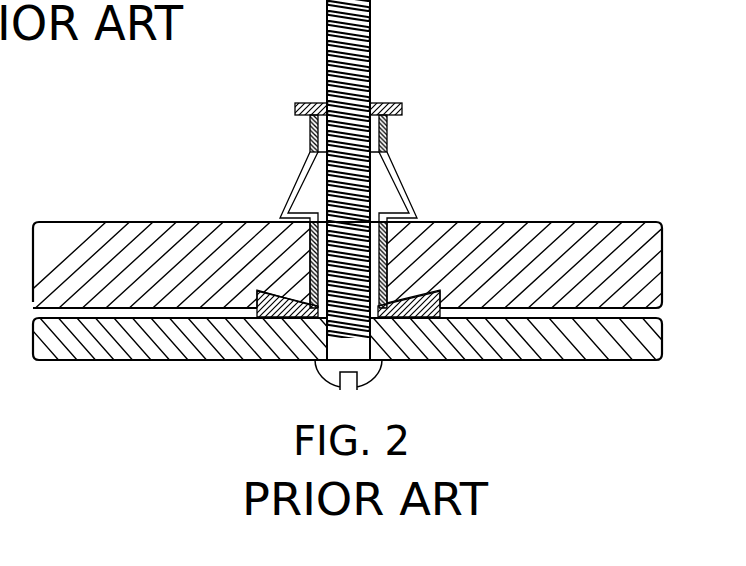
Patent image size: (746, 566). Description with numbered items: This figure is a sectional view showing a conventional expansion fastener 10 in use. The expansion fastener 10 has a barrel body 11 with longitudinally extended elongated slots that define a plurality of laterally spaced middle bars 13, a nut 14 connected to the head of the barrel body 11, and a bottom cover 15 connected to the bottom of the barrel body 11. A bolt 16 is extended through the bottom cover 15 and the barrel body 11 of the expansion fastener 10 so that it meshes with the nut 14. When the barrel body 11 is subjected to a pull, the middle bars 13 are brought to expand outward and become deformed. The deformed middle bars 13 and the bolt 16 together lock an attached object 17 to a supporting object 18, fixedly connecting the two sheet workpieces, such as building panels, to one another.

The expansion fastener 10 is at (358, 219).
The barrel body 11 is at (358, 221).
The middle bars 13 is at (299, 177).
The nut 14 is at (315, 103).
The bottom cover 15 is at (423, 320).
The bolt 16 is at (328, 62).
The attached object 17 is at (502, 352).
The supporting object 18 is at (545, 232).